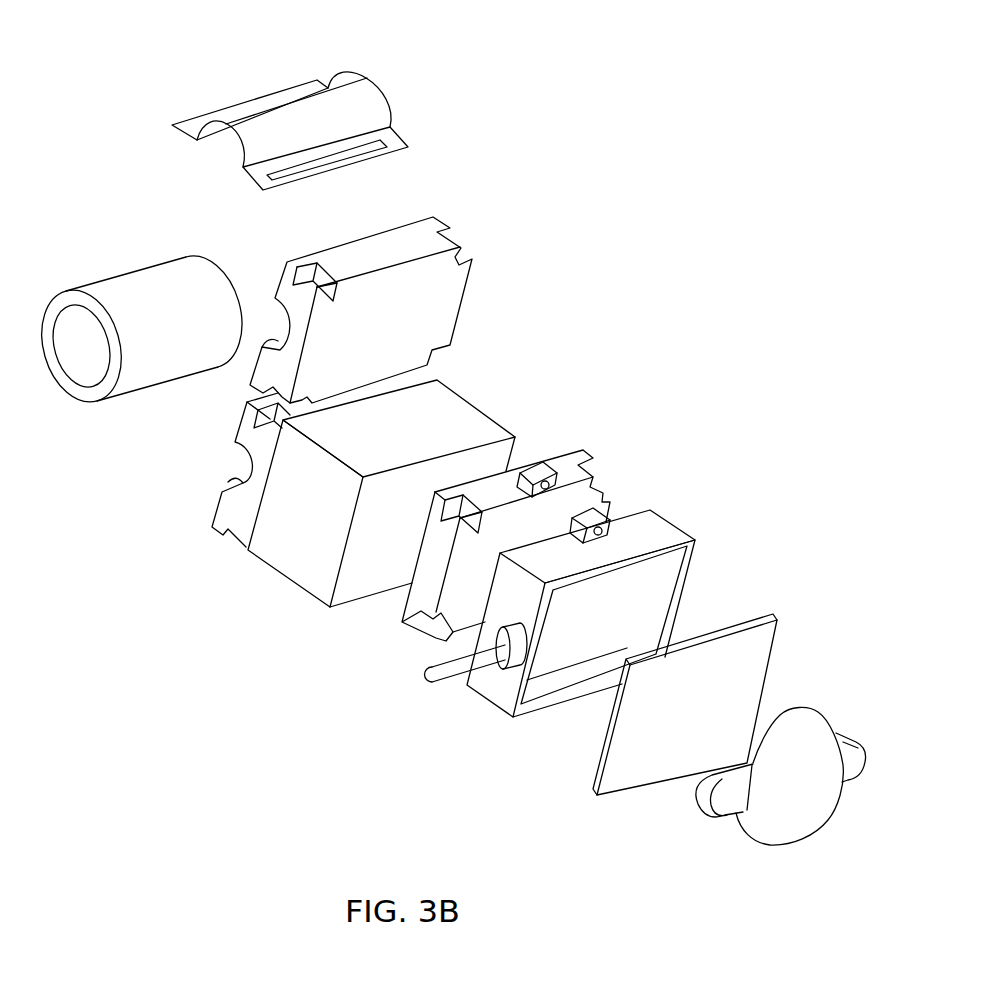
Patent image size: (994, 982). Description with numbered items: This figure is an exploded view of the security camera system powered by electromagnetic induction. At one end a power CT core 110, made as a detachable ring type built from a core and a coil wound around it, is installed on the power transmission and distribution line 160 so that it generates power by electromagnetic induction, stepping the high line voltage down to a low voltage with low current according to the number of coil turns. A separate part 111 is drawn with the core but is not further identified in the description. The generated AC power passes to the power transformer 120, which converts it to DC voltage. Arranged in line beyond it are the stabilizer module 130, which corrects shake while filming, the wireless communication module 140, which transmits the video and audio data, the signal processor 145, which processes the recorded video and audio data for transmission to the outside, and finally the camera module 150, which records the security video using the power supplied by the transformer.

The power CT core 110 is at (220, 535).
The cover clip 111 is at (360, 92).
The power transformer 120 is at (293, 570).
The stabilizer module 130 is at (407, 628).
The wireless communication module 140 is at (535, 715).
The signal processor 145 is at (637, 777).
The camera module 150 is at (793, 833).
The power transmission and distribution line 160 is at (152, 282).